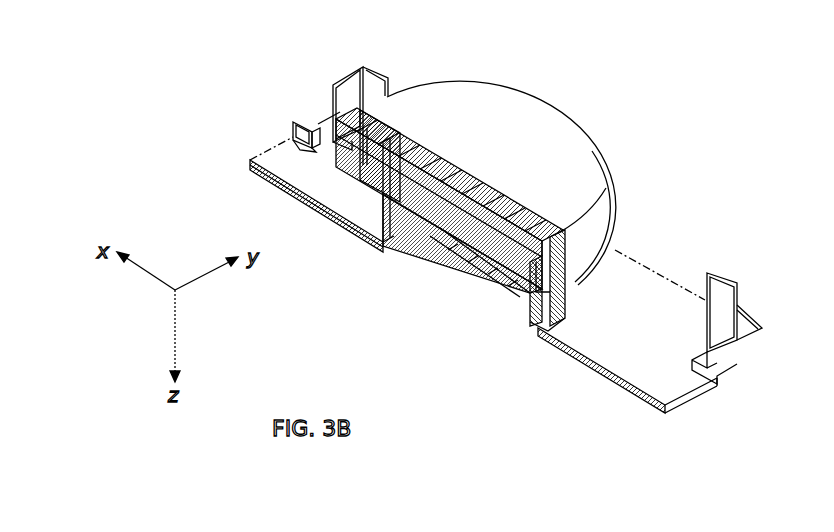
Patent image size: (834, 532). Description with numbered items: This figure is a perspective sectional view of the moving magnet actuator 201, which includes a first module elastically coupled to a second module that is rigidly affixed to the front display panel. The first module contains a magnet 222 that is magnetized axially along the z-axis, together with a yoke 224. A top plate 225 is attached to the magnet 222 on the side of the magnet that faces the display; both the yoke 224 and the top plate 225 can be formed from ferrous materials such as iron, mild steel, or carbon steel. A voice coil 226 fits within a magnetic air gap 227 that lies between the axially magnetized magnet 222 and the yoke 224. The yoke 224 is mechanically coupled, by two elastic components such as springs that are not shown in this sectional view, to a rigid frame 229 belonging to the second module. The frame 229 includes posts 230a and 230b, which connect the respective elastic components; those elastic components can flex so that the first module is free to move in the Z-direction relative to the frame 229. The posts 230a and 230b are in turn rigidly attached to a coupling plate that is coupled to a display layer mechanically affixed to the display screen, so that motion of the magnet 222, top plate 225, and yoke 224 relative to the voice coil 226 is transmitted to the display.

The moving magnet actuator 201 is at (714, 165).
The magnet 222 is at (423, 198).
The yoke 224 is at (575, 168).
The top plate 225 is at (460, 250).
The voice coil 226 is at (540, 291).
The magnetic air gap 227 is at (375, 163).
The rigid frame 229 is at (657, 333).
The post 230a is at (718, 300).
The post 230b is at (367, 84).